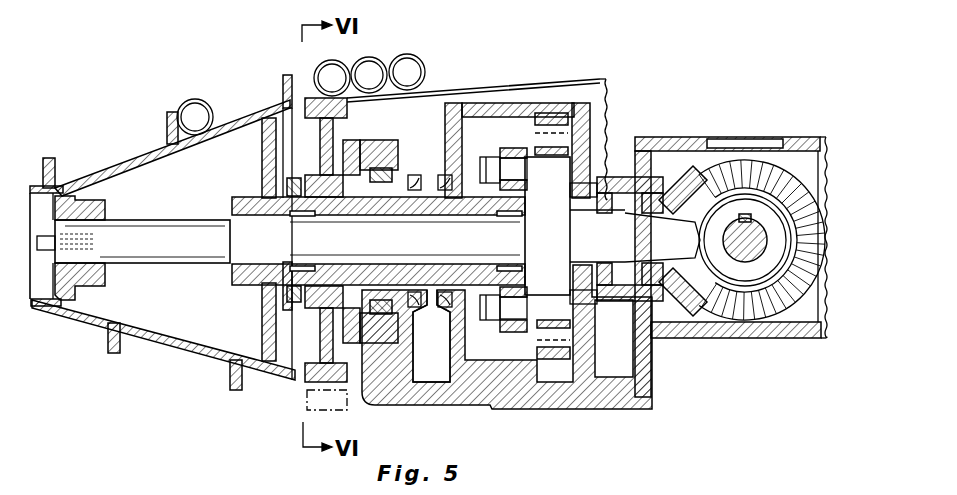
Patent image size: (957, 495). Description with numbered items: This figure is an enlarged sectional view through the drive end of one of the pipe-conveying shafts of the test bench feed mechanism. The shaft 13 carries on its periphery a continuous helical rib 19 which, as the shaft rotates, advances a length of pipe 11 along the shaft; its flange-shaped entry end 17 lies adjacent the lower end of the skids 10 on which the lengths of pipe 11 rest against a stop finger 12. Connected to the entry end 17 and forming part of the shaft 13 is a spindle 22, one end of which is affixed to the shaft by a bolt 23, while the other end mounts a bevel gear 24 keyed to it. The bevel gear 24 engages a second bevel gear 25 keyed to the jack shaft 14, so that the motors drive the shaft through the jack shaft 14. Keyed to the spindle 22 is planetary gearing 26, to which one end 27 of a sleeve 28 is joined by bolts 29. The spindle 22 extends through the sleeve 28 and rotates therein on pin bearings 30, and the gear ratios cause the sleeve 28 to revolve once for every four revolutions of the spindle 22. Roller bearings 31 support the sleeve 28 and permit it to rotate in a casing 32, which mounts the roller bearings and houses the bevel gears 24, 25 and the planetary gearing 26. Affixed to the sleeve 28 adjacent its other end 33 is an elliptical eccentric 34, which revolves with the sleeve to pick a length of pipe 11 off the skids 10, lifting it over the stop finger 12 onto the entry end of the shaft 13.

The skids 10 is at (531, 80).
The lengths of pipe 11 is at (197, 101).
The stop finger 12 is at (290, 96).
The shaft 13 is at (38, 186).
The jack shaft 14 is at (762, 223).
The entry end 17 is at (250, 117).
The helical rib 19 is at (166, 127).
The spindle 22 is at (163, 218).
The bolt 23 is at (48, 255).
The bevel gear 24 is at (668, 150).
The second bevel gear 25 is at (776, 166).
The planetary gearing 26 is at (560, 233).
The one end of sleeve 27 is at (513, 153).
The sleeve 28 is at (433, 288).
The bolts 29 is at (484, 161).
The pin bearings 30 is at (310, 216).
The roller bearings 31 is at (390, 177).
The casing 32 is at (445, 395).
The other end of sleeve 33 is at (287, 292).
The eccentric 34 is at (347, 110).